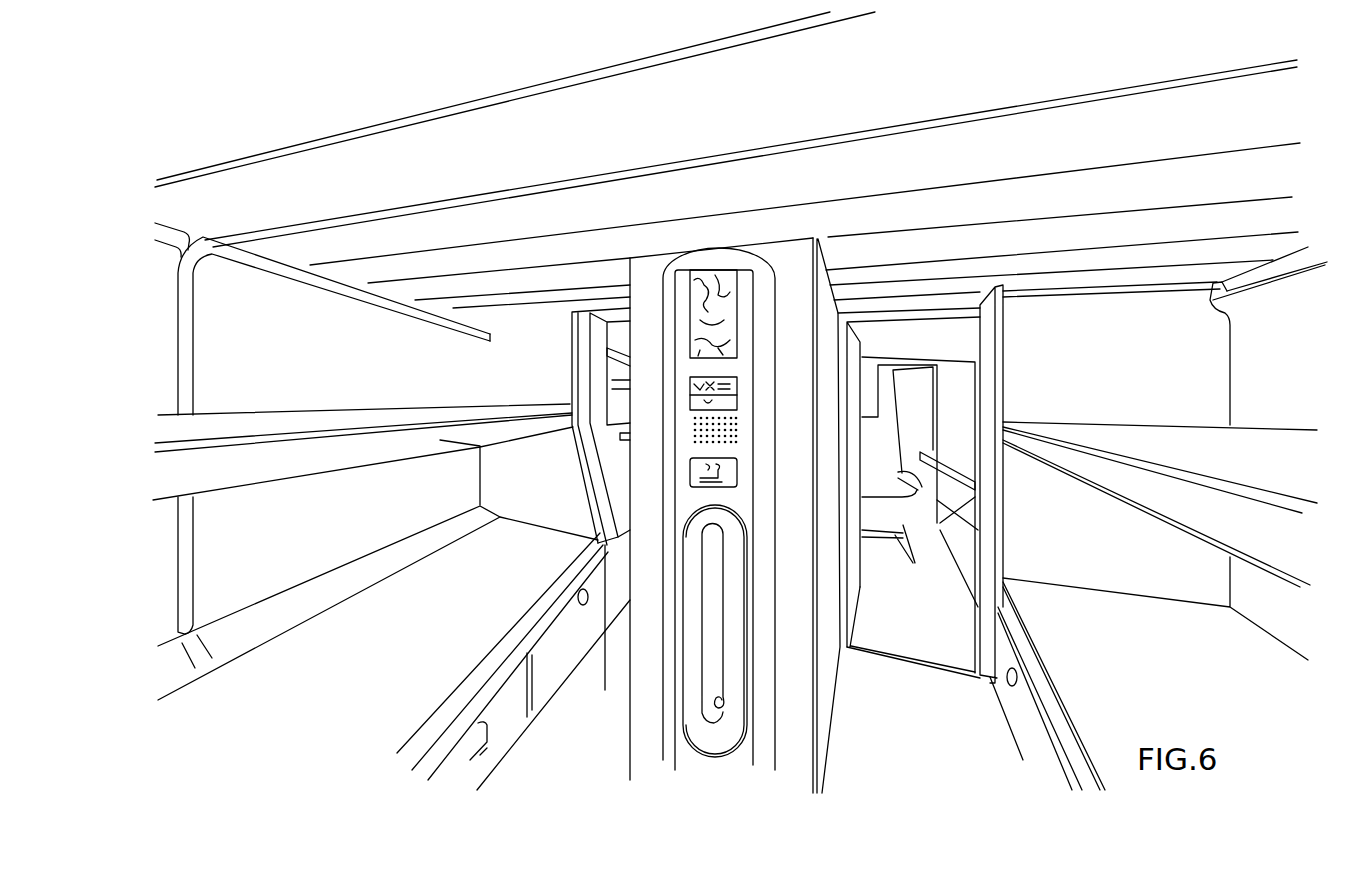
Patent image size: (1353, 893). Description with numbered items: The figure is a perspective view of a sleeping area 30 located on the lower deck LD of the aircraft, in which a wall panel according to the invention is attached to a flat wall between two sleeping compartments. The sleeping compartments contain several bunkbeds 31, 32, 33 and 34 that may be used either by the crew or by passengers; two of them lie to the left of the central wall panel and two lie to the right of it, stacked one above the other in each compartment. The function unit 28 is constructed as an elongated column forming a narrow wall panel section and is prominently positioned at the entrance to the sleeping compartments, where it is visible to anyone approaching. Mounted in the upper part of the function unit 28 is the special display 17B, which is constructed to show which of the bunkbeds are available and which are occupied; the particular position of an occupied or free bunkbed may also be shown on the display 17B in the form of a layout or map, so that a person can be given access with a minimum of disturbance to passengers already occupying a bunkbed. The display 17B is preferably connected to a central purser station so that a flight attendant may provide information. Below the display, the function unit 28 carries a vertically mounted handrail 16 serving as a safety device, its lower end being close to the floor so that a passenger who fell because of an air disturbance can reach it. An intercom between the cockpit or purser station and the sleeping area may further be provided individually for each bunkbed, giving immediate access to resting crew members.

The sleeping area 30 is at (992, 102).
The special display 17B is at (718, 272).
The bunkbed 34 is at (383, 418).
The bunkbed 33 is at (1240, 470).
The bunkbed 31 is at (427, 649).
The bunkbed 32 is at (1212, 688).
The handrail 16 is at (705, 625).
The function unit 28 is at (725, 738).
The lower deck LD is at (588, 782).